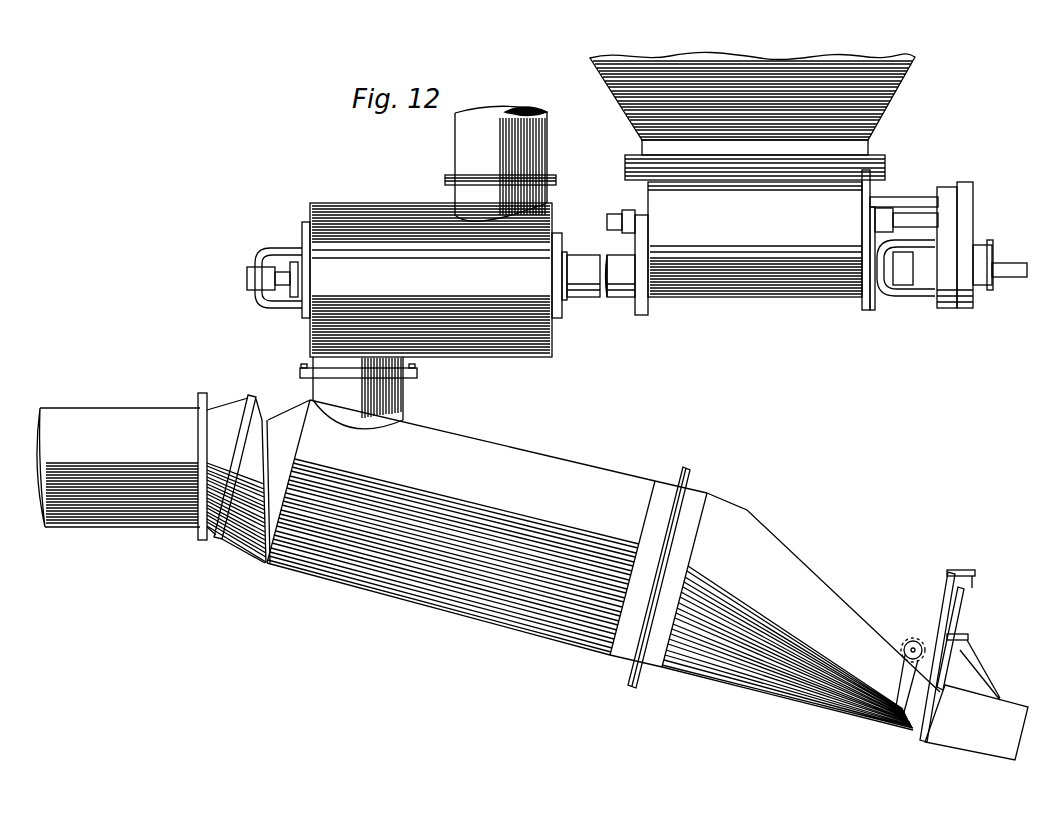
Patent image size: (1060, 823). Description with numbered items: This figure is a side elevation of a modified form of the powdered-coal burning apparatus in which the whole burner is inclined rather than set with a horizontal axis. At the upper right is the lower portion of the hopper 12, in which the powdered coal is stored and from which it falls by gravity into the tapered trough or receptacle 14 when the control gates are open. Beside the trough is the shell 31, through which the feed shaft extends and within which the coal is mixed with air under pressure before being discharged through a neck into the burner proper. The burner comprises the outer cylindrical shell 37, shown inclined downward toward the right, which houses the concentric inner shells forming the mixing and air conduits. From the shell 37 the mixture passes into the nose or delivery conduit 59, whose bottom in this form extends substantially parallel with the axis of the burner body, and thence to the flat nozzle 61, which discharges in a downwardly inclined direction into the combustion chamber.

The hopper 12 is at (635, 62).
The tapered trough 14 is at (794, 242).
The shell 31 is at (404, 267).
The outer cylindrical shell 37 is at (363, 540).
The delivery conduit 59 is at (775, 605).
The flat nozzle 61 is at (961, 665).